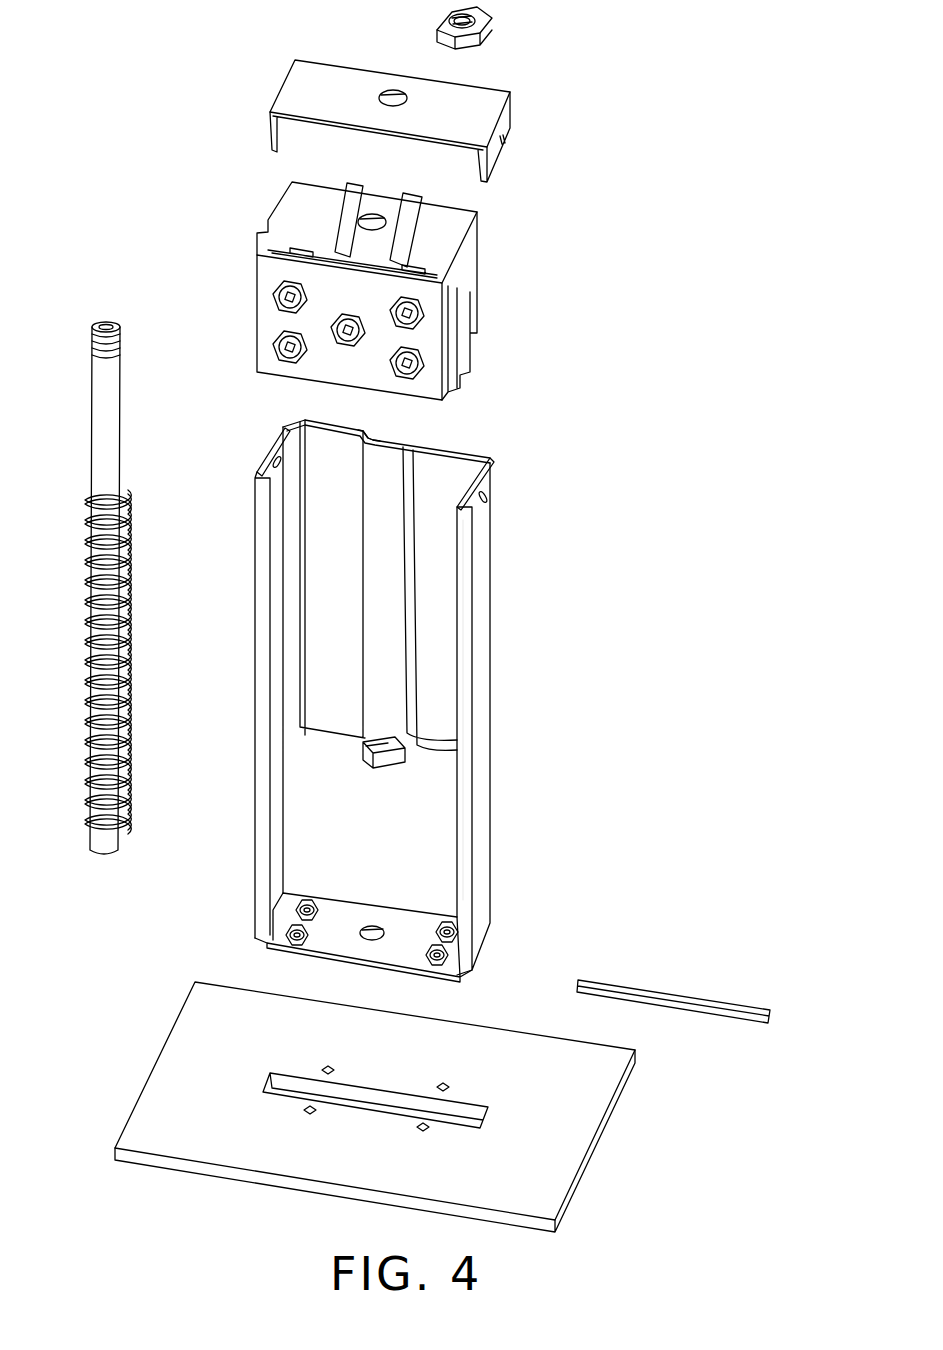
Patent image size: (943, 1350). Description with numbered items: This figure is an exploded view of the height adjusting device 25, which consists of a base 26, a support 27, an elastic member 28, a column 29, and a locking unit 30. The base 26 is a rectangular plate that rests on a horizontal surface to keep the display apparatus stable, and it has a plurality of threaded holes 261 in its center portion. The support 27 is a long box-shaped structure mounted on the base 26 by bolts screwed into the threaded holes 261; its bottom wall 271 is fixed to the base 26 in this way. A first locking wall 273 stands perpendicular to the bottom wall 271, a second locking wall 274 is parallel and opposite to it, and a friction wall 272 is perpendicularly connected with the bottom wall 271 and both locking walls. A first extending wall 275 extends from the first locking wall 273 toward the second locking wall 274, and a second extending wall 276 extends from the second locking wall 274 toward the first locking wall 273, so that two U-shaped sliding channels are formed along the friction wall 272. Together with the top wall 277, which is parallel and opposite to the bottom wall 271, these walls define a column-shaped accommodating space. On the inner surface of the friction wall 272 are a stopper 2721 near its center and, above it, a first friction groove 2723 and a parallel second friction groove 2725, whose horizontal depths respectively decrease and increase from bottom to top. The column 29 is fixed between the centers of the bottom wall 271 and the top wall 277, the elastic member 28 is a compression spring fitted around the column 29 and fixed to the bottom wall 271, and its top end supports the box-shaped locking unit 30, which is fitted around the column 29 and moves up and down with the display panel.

The height adjusting device 25 is at (302, 37).
The top wall 277 is at (485, 95).
The locking unit 30 is at (455, 221).
The column 29 is at (107, 423).
The elastic member 28 is at (122, 827).
The support 27 is at (406, 694).
The bottom wall 271 is at (422, 933).
The friction wall 272 is at (335, 802).
The first locking wall 273 is at (482, 558).
The second locking wall 274 is at (267, 462).
The first extending wall 275 is at (463, 635).
The second extending wall 276 is at (262, 499).
The stopper 2721 is at (440, 762).
The first friction groove 2723 is at (450, 475).
The second friction groove 2725 is at (337, 452).
The base 26 is at (411, 1107).
The threaded holes 261 is at (428, 1130).